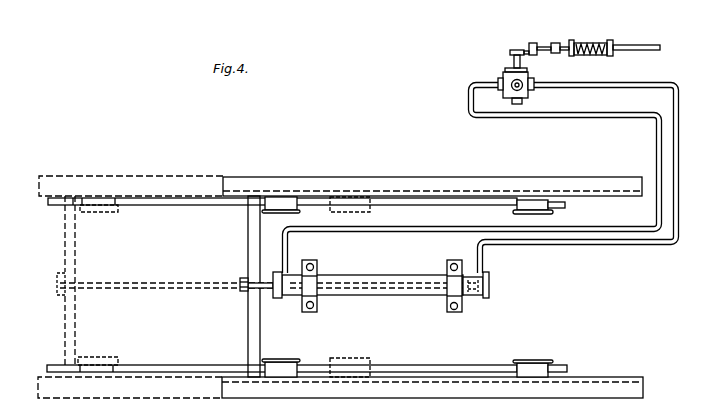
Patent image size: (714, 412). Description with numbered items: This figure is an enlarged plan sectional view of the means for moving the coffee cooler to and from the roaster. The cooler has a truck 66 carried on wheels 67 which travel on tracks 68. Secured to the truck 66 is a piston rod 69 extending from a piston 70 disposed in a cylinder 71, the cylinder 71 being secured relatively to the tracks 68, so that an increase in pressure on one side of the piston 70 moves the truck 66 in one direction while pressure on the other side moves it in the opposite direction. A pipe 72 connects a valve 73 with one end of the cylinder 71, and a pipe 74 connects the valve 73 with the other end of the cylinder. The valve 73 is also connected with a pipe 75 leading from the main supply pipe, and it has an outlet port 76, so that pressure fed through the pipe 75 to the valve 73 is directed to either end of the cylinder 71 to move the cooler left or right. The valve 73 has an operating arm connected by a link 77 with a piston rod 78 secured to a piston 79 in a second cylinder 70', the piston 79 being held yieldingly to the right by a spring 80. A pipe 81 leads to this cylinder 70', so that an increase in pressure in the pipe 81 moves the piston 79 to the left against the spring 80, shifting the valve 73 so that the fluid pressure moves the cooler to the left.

The truck 66 is at (426, 177).
The wheels 67 is at (281, 197).
The tracks 68 is at (167, 205).
The piston rod 69 is at (368, 292).
The piston 70 is at (397, 295).
The cylinder 70' is at (591, 34).
The cylinder 71 is at (377, 275).
The pipe 72 is at (593, 113).
The valve 73 is at (503, 80).
The pipe 74 is at (642, 83).
The pipe 75 is at (532, 80).
The outlet port 76 is at (511, 52).
The link 77 is at (540, 43).
The piston rod 78 is at (563, 45).
The piston 79 is at (611, 57).
The spring 80 is at (612, 45).
The pipe 81 is at (648, 46).